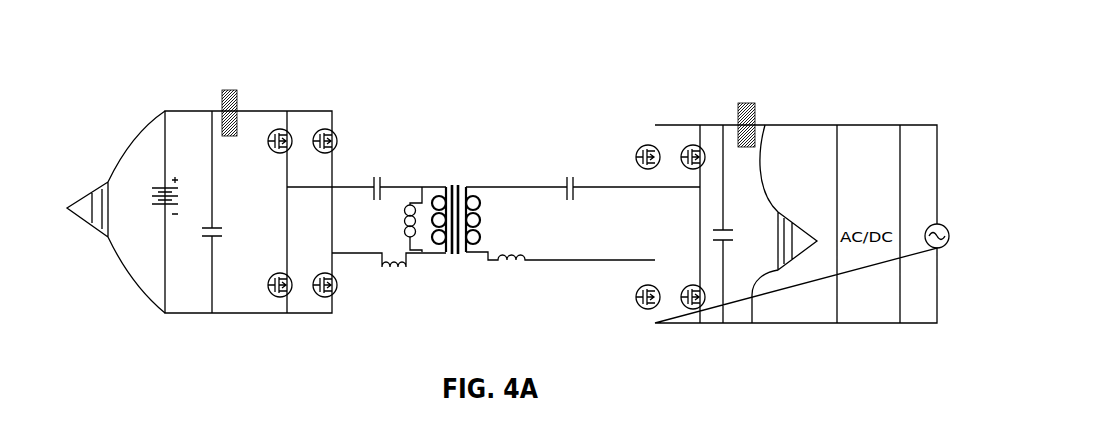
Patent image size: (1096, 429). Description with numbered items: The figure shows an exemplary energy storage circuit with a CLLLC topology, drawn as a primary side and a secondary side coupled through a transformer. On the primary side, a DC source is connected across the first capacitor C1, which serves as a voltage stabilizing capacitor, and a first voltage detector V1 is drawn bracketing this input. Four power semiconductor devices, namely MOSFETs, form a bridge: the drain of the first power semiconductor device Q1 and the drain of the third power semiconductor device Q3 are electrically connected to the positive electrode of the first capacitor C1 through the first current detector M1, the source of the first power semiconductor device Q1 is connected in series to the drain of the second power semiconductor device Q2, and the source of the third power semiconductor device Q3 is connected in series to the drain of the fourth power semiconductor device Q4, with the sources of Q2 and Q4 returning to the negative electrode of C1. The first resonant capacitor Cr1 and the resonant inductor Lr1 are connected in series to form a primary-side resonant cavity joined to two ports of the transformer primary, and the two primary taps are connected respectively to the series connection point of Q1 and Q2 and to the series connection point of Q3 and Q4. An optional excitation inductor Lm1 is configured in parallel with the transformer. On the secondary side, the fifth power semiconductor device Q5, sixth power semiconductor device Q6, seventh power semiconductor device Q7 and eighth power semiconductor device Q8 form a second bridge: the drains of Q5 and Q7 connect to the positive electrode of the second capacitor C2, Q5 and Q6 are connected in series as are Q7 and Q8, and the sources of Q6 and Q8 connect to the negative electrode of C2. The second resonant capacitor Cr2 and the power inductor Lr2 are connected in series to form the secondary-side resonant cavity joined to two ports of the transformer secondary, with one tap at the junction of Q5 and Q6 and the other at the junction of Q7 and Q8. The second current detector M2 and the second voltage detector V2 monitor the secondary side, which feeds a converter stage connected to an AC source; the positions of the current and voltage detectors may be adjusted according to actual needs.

The DC power source DC is at (150, 195).
The first voltage detector V1 is at (97, 225).
The first current detector M1 is at (231, 88).
The first capacitor C1 is at (226, 233).
The first power semiconductor device Q1 is at (267, 141).
The second power semiconductor device Q2 is at (267, 285).
The third power semiconductor device Q3 is at (338, 141).
The fourth power semiconductor device Q4 is at (338, 285).
The first resonant capacitor Cr1 is at (366, 183).
The resonant inductor Lr1 is at (389, 274).
The excitation inductor Lm1 is at (394, 219).
The second resonant capacitor Cr2 is at (583, 183).
The power inductor Lr2 is at (560, 242).
The fifth power semiconductor device Q5 is at (635, 157).
The sixth power semiconductor device Q6 is at (635, 297).
The seventh power semiconductor device Q7 is at (686, 165).
The eighth power semiconductor device Q8 is at (686, 286).
The second capacitor C2 is at (736, 238).
The second current detector M2 is at (742, 100).
The second voltage detector V2 is at (793, 224).
The AC power source AC is at (927, 236).